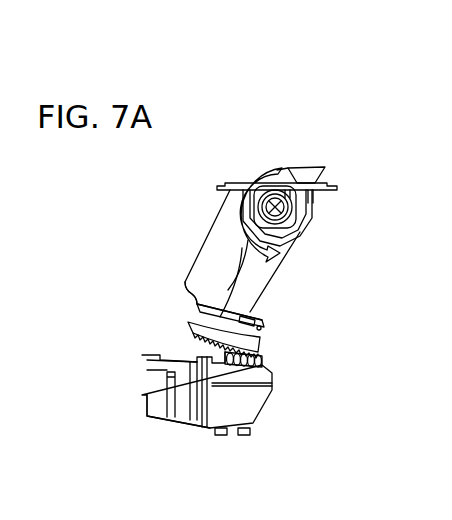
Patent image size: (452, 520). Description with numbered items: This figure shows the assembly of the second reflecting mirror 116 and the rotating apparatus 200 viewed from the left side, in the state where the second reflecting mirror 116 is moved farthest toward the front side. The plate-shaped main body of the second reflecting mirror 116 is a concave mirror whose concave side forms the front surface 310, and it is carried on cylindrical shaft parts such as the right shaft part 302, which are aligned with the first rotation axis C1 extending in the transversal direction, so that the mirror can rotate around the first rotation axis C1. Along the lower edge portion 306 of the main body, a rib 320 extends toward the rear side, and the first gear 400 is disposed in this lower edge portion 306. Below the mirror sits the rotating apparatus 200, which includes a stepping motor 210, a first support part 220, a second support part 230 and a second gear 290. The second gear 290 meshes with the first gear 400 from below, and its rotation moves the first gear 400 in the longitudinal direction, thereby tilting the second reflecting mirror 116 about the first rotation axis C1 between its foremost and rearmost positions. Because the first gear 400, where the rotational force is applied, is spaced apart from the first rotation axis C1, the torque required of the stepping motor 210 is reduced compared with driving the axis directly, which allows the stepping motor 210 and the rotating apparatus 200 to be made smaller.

The second reflecting mirror 116 is at (303, 157).
The first rotation axis C1 is at (288, 205).
The front surface 310 is at (210, 238).
The lower edge portion 306 is at (190, 292).
The right shaft part 302 is at (290, 238).
The rib 320 is at (263, 313).
The first gear 400 is at (262, 338).
The second gear 290 is at (262, 364).
The first support part 220 is at (220, 373).
The stepping motor 210 is at (157, 417).
The rotating apparatus 200 is at (184, 425).
The second support part 230 is at (232, 430).